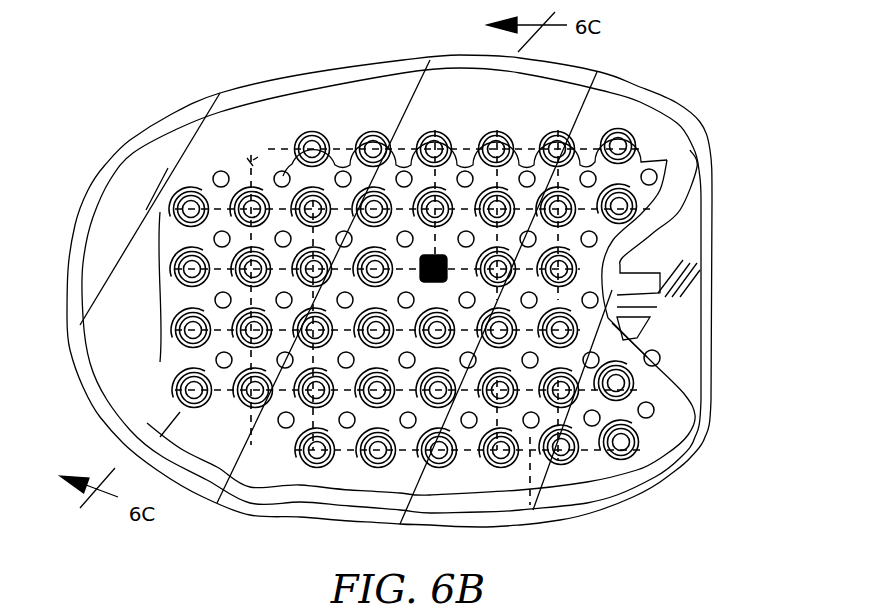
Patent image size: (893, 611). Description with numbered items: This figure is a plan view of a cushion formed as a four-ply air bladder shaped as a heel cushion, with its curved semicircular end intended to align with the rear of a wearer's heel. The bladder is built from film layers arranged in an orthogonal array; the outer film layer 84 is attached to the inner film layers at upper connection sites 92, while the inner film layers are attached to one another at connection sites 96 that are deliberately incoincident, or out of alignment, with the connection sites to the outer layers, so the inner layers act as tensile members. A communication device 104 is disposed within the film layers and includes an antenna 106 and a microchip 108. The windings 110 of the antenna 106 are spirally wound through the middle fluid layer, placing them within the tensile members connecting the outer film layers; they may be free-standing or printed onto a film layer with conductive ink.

The outer film layer 84 is at (637, 118).
The upper connection sites 92 is at (621, 450).
The connection sites 96 is at (533, 510).
The communication device 104 is at (240, 162).
The antenna 106 is at (281, 154).
The microchip 108 is at (422, 253).
The windings 110 is at (660, 293).